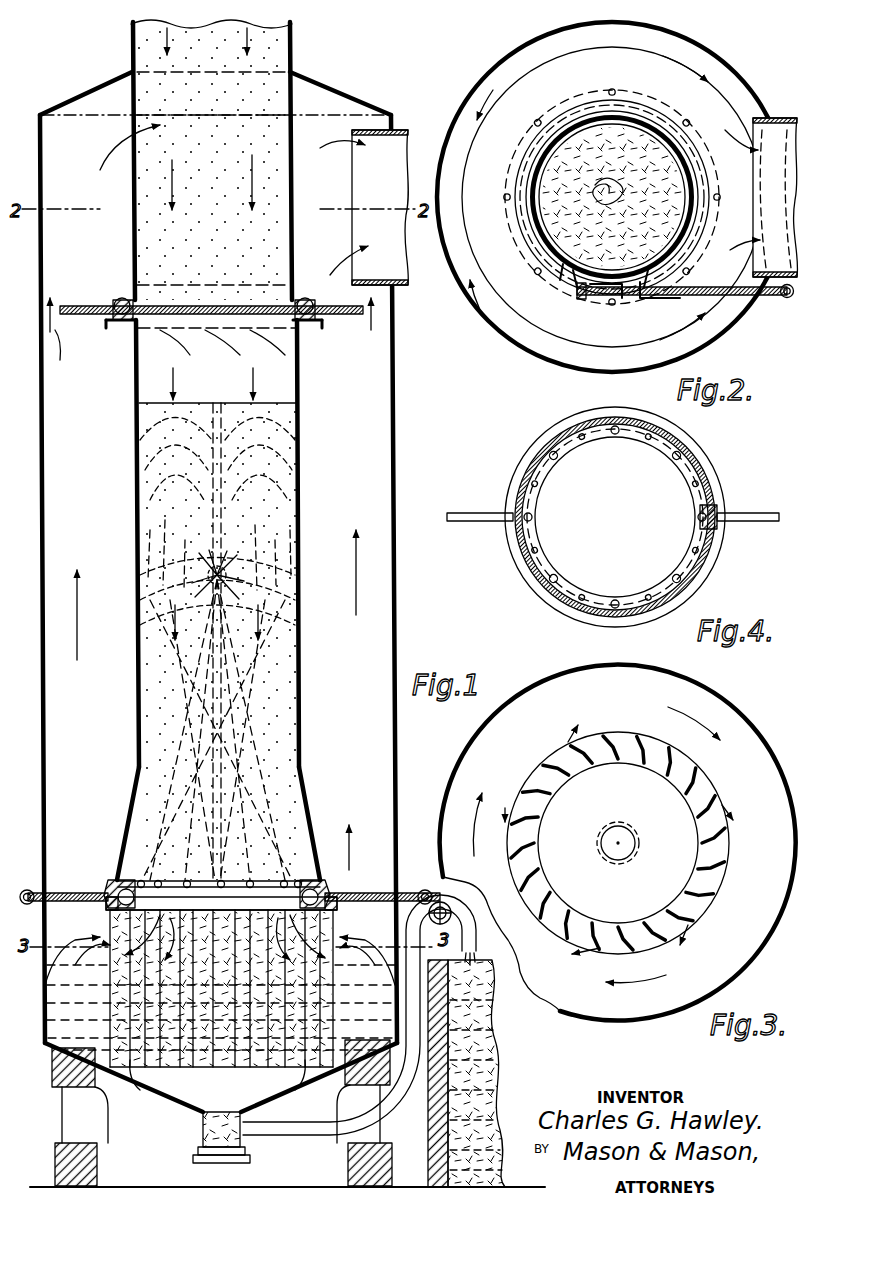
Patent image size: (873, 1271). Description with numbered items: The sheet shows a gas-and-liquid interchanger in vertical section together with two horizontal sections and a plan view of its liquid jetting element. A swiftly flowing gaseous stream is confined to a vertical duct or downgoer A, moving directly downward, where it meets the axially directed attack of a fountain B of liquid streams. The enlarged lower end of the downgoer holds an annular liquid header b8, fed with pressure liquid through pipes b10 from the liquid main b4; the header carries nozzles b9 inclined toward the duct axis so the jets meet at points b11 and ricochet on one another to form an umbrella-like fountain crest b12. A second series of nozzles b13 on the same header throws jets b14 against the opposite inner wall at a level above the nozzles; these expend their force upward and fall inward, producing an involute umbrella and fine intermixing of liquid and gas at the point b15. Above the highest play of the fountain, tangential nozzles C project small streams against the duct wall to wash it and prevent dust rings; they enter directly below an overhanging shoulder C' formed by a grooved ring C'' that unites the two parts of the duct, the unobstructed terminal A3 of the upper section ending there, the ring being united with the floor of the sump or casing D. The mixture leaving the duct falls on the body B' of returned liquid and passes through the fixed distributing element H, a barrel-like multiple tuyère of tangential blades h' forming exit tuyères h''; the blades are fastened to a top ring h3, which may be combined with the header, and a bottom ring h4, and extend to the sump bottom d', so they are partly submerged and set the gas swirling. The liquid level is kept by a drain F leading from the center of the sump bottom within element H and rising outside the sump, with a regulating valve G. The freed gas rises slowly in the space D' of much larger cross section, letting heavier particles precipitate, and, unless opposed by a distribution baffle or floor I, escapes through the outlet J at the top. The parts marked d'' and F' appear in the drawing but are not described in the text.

In FIG. 1, the duct A is at (260, 840).
In FIG. 2, the duct A is at (690, 212).
In FIG. 1, the unobstructed terminal A3 is at (174, 300).
In FIG. 1, the fountain B is at (229, 624).
In FIG. 2, the fountain B is at (612, 197).
In FIG. 1, the body of returned liquid B' is at (221, 1007).
In FIG. 1, the tangential nozzles C is at (211, 300).
In FIG. 2, the tangential nozzles C is at (649, 208).
In FIG. 1, the overhanging shoulder C' is at (214, 292).
In FIG. 1, the grooved ring C'' is at (218, 286).
In FIG. 2, the grooved ring C'' is at (591, 289).
In FIG. 1, the sump or casing D is at (229, 579).
In FIG. 2, the sump or casing D is at (607, 197).
In FIG. 3, the sump or casing D is at (618, 843).
In FIG. 1, the space D' is at (210, 584).
In FIG. 2, the space D' is at (587, 194).
In FIG. 3, the space D' is at (596, 845).
In FIG. 1, the sump bottom d' is at (221, 1087).
In FIG. 1, the roof of shell d'' is at (215, 90).
In FIG. 1, the drain F is at (215, 1137).
In FIG. 1, the discharge pipe F' is at (359, 1015).
In FIG. 3, the discharge pipe F' is at (626, 843).
In FIG. 1, the regulating valve G is at (447, 909).
In FIG. 1, the gas distributing element H is at (221, 988).
In FIG. 3, the gas distributing element H is at (618, 843).
In FIG. 1, the distribution baffle or floor I is at (343, 318).
In FIG. 2, the distribution baffle or floor I is at (471, 144).
In FIG. 1, the outlet J is at (364, 207).
In FIG. 2, the outlet J is at (786, 118).
In FIG. 1, the liquid main b4 is at (30, 882).
In FIG. 1, the annular liquid header b8 is at (322, 892).
In FIG. 4, the annular liquid header b8 is at (720, 508).
In FIG. 1, the nozzles b9 is at (213, 878).
In FIG. 4, the nozzles b9 is at (533, 517).
In FIG. 1, the supply pipes b10 is at (380, 893).
In FIG. 4, the supply pipes b10 is at (481, 514).
In FIG. 1, the jet meeting points b11 is at (226, 489).
In FIG. 1, the fountain crest b12 is at (228, 405).
In FIG. 1, the second series of nozzles b13 is at (258, 878).
In FIG. 4, the second series of nozzles b13 is at (538, 553).
In FIG. 1, the jets b14 is at (195, 810).
In FIG. 1, the intermixing point b15 is at (235, 576).
In FIG. 1, the blades h' is at (220, 950).
In FIG. 3, the blades h' is at (620, 843).
In FIG. 3, the tangential exit tuyères h'' is at (621, 835).
In FIG. 1, the top ring h3 is at (115, 903).
In FIG. 4, the top ring h3 is at (545, 440).
In FIG. 1, the bottom ring h4 is at (143, 1096).
In FIG. 3, the bottom ring h4 is at (632, 960).